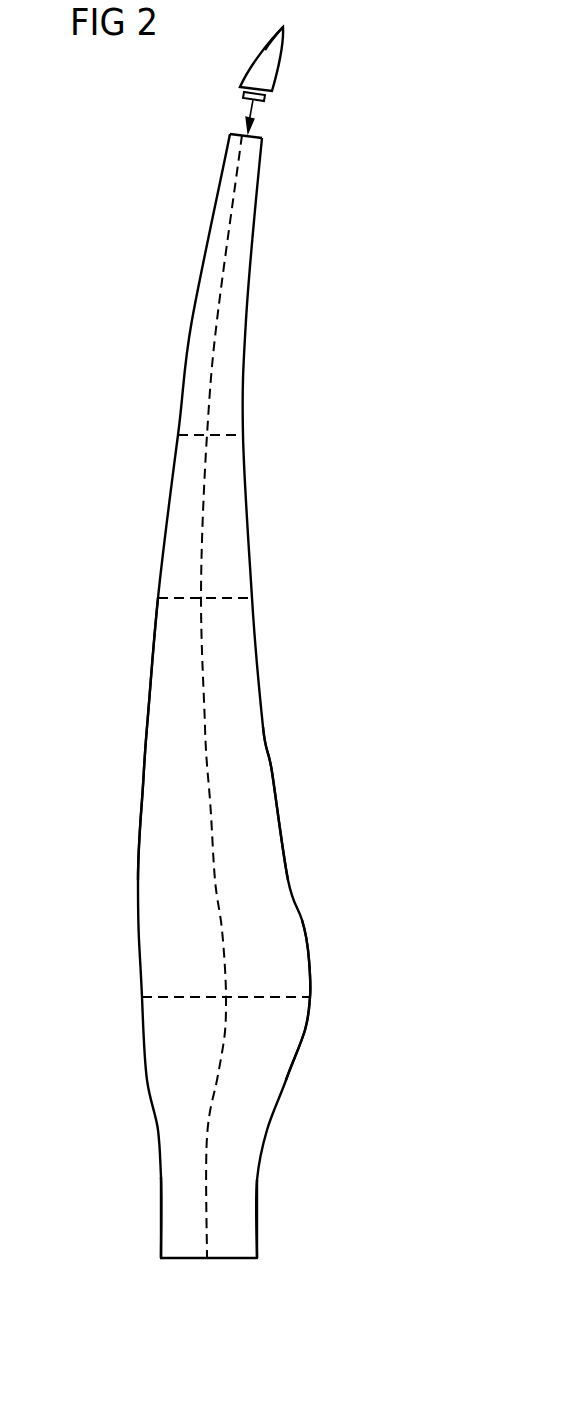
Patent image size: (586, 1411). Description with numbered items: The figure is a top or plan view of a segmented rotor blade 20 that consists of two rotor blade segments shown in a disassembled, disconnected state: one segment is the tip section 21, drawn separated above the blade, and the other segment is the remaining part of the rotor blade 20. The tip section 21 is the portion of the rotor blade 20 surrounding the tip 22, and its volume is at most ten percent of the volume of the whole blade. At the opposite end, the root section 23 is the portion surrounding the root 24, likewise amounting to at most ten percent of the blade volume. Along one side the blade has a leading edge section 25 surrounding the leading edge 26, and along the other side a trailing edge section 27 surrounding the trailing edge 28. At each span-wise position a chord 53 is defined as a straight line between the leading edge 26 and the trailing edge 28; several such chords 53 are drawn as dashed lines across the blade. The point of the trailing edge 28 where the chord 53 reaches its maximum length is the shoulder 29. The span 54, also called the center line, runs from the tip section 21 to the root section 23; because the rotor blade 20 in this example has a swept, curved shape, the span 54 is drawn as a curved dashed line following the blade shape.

The rotor blade 20 is at (408, 486).
The tip section 21 is at (267, 67).
The tip 22 is at (284, 24).
The root section 23 is at (245, 1208).
The root 24 is at (230, 1259).
The leading edge section 25 is at (157, 727).
The leading edge 26 is at (142, 768).
The trailing edge section 27 is at (250, 732).
The trailing edge 28 is at (270, 772).
The shoulder 29 is at (310, 998).
The chord 53 is at (222, 430).
The span 54 is at (222, 930).